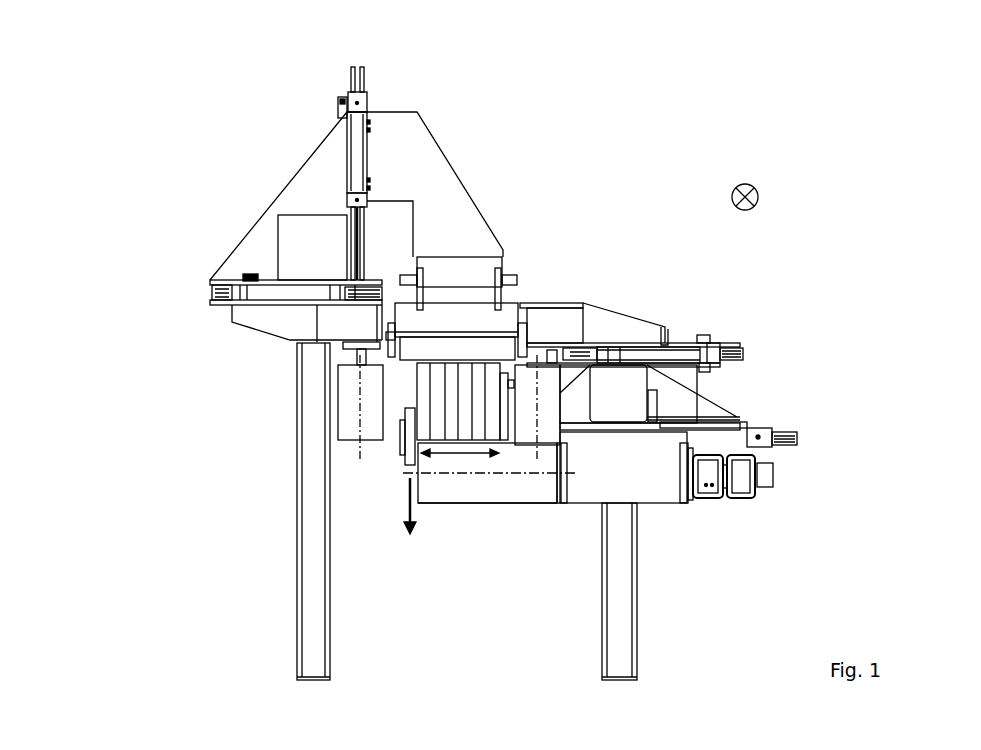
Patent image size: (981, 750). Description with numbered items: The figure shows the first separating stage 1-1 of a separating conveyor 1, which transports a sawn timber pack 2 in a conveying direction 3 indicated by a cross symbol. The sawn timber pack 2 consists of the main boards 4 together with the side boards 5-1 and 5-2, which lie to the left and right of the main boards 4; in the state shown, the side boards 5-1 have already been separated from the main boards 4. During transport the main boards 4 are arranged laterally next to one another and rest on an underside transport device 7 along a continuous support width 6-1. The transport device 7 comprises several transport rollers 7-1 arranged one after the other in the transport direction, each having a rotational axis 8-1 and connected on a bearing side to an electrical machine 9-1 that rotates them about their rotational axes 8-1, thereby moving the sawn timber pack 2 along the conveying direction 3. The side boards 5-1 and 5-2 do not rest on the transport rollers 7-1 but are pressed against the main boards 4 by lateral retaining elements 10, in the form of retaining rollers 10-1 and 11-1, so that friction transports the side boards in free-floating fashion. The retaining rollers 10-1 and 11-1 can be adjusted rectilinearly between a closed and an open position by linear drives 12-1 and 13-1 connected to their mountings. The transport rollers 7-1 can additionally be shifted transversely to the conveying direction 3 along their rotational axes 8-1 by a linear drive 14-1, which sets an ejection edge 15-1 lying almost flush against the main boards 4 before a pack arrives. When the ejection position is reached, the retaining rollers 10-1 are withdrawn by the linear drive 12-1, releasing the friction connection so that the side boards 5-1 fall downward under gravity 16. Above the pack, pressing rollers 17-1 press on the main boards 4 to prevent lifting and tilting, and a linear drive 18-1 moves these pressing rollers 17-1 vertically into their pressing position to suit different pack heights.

The separating conveyor 1 is at (632, 147).
The first separating stage 1-1 is at (616, 293).
The sawn timber pack 2 is at (494, 372).
The conveying direction 3 is at (750, 210).
The main boards 4 is at (465, 382).
The side boards 5-1 is at (402, 440).
The side boards 5-2 is at (568, 442).
The continuous support width 6-1 is at (487, 455).
The transport device 7 is at (477, 515).
The transport rollers 7-1 is at (495, 503).
The rotational axis 8-1 is at (533, 473).
The electrical machine 9-1 is at (757, 495).
The lateral retaining elements 10 is at (465, 382).
The retaining rollers 10-1 is at (327, 417).
The retaining rollers 11-1 is at (562, 405).
The linear drive 12-1 is at (210, 288).
The linear drive 13-1 is at (745, 355).
The linear drive 14-1 is at (800, 447).
The ejection edge 15-1 is at (422, 457).
The gravity 16 is at (405, 518).
The pressing rollers 17-1 is at (430, 337).
The linear drive 18-1 is at (367, 100).